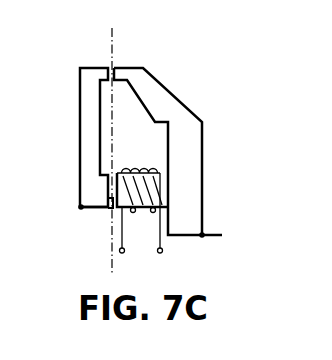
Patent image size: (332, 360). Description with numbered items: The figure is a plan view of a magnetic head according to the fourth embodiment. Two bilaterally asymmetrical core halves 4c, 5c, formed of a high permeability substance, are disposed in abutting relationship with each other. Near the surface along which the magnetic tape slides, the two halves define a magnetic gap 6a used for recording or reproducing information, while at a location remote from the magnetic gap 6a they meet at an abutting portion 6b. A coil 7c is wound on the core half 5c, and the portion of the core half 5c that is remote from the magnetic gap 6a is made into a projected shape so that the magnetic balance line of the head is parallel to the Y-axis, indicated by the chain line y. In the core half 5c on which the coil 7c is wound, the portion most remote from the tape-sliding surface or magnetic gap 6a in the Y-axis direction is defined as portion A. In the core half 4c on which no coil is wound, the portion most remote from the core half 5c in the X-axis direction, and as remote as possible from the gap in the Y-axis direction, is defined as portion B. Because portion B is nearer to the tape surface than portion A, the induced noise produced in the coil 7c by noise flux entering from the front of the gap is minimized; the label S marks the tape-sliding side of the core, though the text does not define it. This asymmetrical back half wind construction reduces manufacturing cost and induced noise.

The Y-axis y is at (112, 140).
The stationary contact member S is at (95, 67).
The magnetic gap 6a is at (115, 67).
The abutting portion 6b is at (101, 209).
The core half 4c is at (95, 199).
The coil 7c is at (160, 178).
The core half 5c is at (185, 228).
The portion A is at (216, 236).
The portion B is at (79, 208).